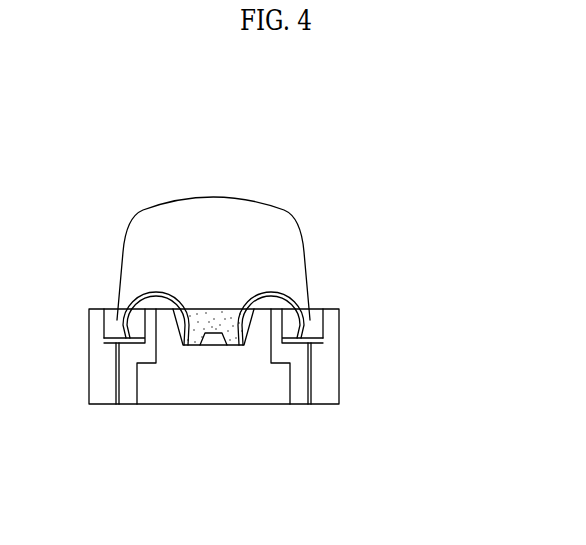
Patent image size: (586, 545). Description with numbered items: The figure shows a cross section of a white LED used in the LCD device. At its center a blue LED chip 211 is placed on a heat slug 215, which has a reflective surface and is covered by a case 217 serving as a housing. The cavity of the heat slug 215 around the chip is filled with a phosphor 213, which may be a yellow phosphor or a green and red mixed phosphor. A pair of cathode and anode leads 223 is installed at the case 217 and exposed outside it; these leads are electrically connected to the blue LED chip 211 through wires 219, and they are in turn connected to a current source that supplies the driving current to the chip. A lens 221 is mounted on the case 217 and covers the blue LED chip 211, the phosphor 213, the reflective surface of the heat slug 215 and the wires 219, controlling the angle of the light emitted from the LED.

The blue LED chip 211 is at (216, 346).
The phosphor 213 is at (217, 313).
The heat slug 215 is at (267, 385).
The case 217 is at (330, 357).
The wires 219 is at (303, 305).
The lens 221 is at (213, 198).
The cathode and anode leads 223 is at (315, 383).